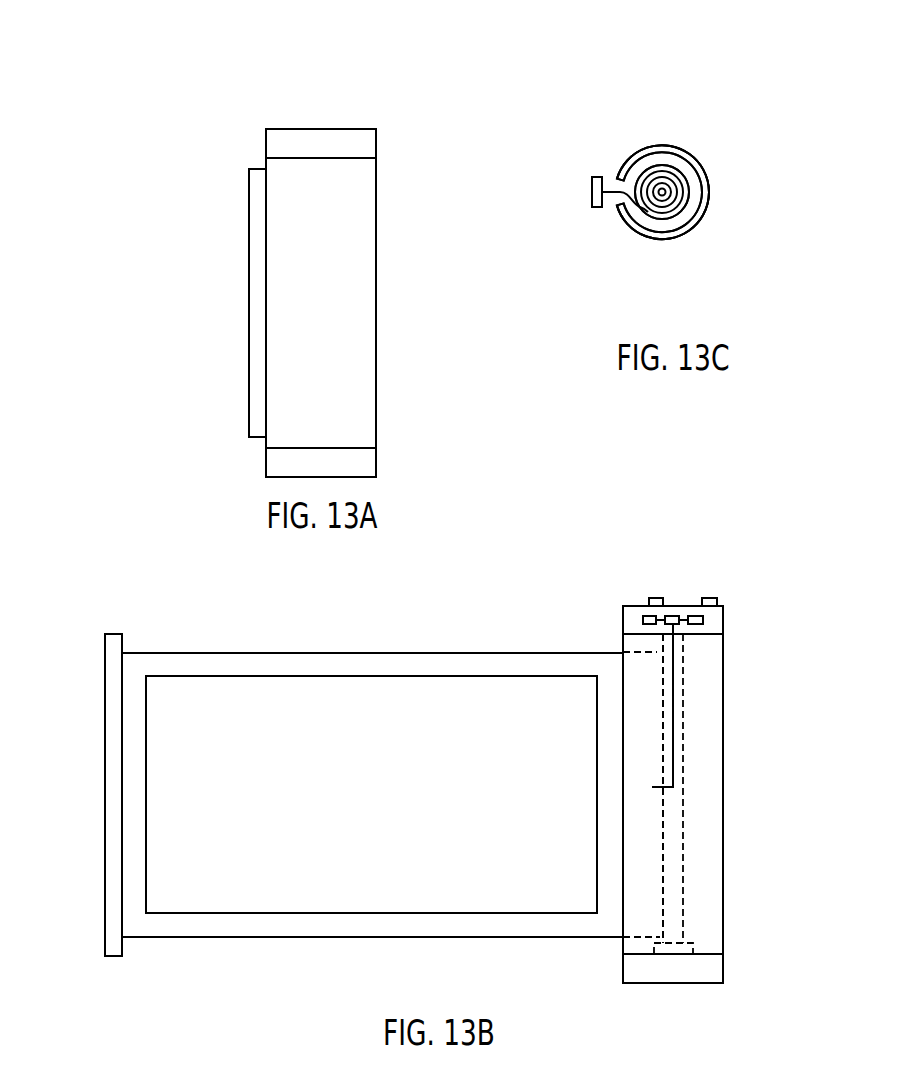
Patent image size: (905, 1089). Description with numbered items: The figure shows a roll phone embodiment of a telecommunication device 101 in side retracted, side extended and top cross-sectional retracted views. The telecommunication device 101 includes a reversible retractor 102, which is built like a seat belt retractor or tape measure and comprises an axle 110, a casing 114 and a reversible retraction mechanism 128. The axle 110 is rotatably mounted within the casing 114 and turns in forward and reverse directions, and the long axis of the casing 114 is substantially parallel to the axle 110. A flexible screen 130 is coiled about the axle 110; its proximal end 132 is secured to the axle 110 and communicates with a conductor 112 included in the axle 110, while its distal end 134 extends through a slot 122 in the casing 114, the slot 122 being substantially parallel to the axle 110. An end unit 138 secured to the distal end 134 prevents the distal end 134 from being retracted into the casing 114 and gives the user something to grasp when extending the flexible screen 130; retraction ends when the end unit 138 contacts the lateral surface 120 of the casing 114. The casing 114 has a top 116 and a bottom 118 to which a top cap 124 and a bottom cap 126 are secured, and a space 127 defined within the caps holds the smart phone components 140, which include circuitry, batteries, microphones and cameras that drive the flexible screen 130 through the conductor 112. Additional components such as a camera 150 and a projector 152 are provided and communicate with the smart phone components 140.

In FIG. 13A, the telecommunication device 101 is at (210, 272).
In FIG. 13C, the telecommunication device 101 is at (714, 225).
In FIG. 13A, the reversible retractor 102 is at (396, 298).
In FIG. 13B, the reversible retractor 102 is at (750, 656).
In FIG. 13C, the axle 110 is at (652, 190).
In FIG. 13B, the axle 110 is at (685, 690).
In FIG. 13C, the conductor 112 is at (664, 196).
In FIG. 13B, the conductor 112 is at (675, 757).
In FIG. 13A, the casing 114 is at (378, 245).
In FIG. 13C, the casing 114 is at (705, 170).
In FIG. 13A, the top 116 is at (352, 160).
In FIG. 13A, the bottom 118 is at (350, 447).
In FIG. 13A, the lateral surface 120 is at (359, 357).
In FIG. 13C, the lateral surface 120 is at (660, 143).
In FIG. 13B, the lateral surface 120 is at (725, 900).
In FIG. 13C, the slot 122 is at (616, 196).
In FIG. 13A, the top cap 124 is at (378, 143).
In FIG. 13B, the top cap 124 is at (725, 620).
In FIG. 13A, the bottom cap 126 is at (378, 462).
In FIG. 13B, the bottom cap 126 is at (725, 968).
In FIG. 13B, the space 127 is at (645, 616).
In FIG. 13B, the reversible retraction mechanism 128 is at (675, 947).
In FIG. 13C, the flexible screen 130 is at (642, 215).
In FIG. 13B, the flexible screen 130 is at (372, 937).
In FIG. 13B, the proximal end 132 is at (662, 908).
In FIG. 13B, the distal end 134 is at (122, 906).
In FIG. 13A, the end unit 138 is at (249, 212).
In FIG. 13C, the end unit 138 is at (593, 177).
In FIG. 13B, the end unit 138 is at (104, 715).
In FIG. 13B, the smart phone components 140 is at (674, 606).
In FIG. 13B, the camera 150 is at (710, 598).
In FIG. 13B, the projector 152 is at (654, 598).